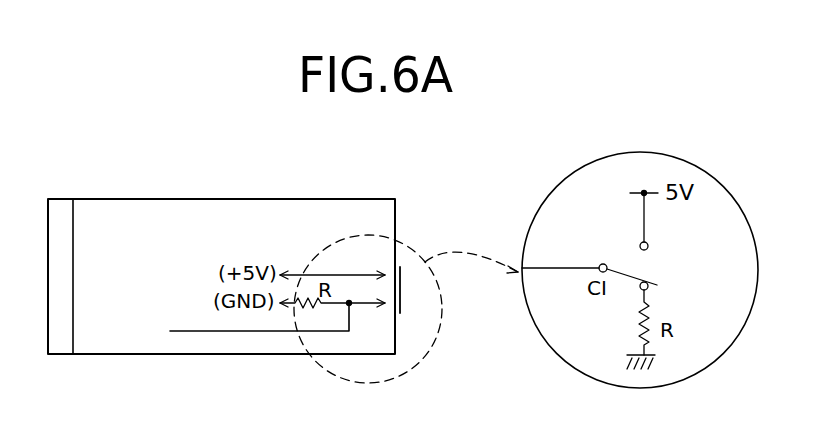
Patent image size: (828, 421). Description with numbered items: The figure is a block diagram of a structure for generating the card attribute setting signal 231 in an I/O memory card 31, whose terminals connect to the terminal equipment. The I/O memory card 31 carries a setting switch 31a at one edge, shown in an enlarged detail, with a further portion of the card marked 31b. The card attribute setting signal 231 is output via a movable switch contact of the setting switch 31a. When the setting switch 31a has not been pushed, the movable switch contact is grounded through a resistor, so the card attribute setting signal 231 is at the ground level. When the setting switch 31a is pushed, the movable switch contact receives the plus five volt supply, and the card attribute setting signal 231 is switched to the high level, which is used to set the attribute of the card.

The I/O memory card 31 is at (148, 199).
The housing end strip 31b is at (62, 199).
The card attribute setting signal 231 is at (233, 333).
The setting switch 31a is at (402, 290).